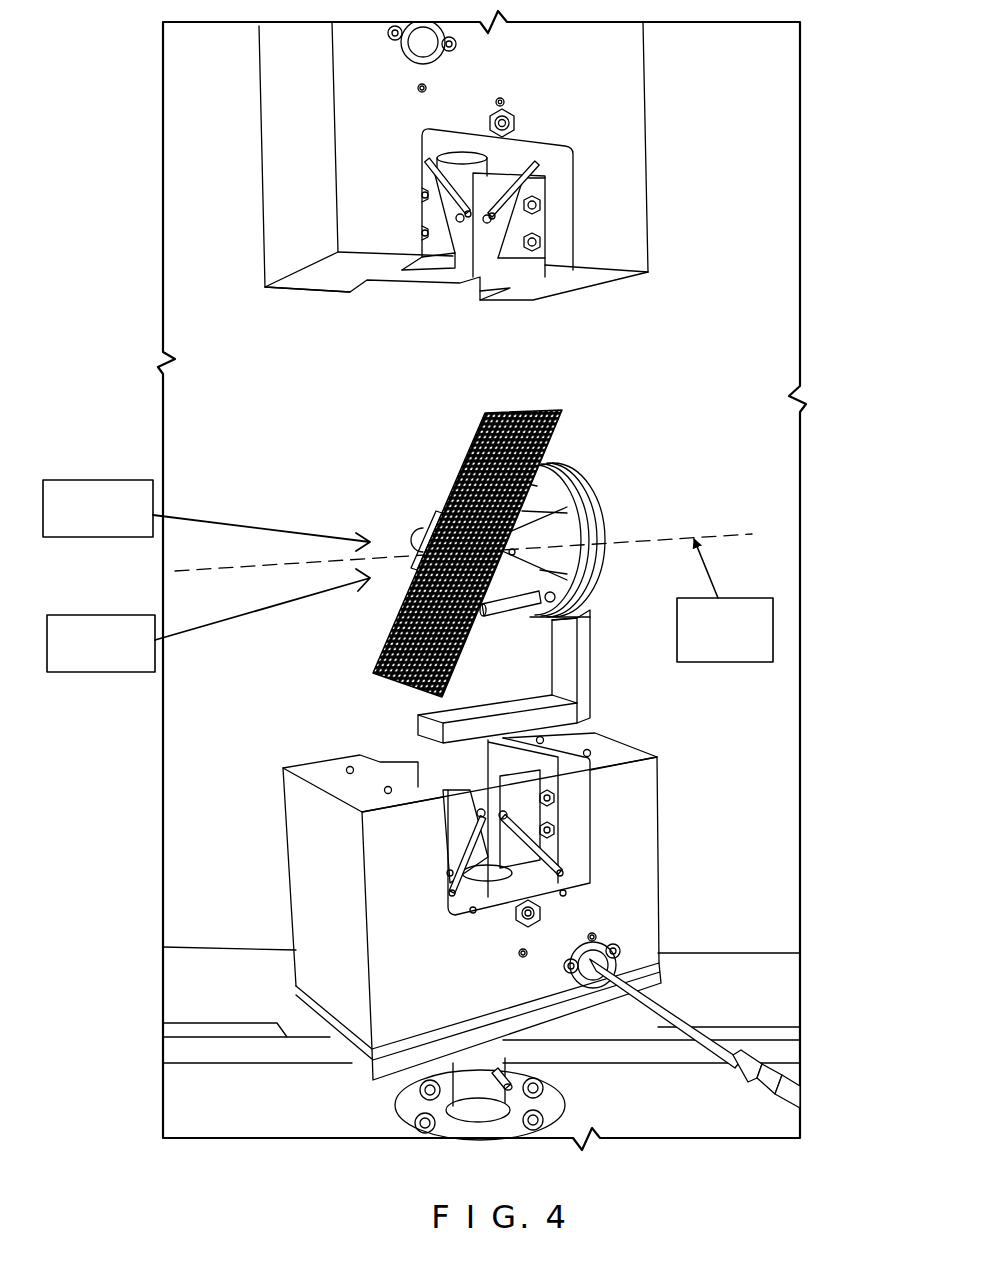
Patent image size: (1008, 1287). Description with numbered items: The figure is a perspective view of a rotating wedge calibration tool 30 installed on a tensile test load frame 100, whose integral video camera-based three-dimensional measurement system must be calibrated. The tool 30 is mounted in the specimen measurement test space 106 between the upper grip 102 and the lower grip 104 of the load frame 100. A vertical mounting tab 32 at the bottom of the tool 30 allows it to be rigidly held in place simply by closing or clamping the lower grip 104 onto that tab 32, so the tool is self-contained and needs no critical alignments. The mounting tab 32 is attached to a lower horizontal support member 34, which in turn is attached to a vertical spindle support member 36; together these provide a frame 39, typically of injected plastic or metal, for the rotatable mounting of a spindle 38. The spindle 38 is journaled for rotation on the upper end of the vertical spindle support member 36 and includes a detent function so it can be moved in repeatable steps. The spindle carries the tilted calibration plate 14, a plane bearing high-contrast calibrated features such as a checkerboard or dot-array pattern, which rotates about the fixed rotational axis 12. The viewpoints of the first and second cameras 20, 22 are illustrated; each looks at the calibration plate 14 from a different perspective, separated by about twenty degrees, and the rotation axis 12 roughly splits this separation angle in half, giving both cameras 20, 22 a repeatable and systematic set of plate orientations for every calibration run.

The tensile test load frame 100 is at (838, 298).
The upper grip 102 is at (630, 218).
The lower grip 104 is at (642, 792).
The test space 106 is at (367, 408).
The rotational axis 12 is at (667, 537).
The calibration plate 14 is at (527, 410).
The first camera 20 is at (75, 478).
The second camera 22 is at (115, 672).
The wedge calibration tool 30 is at (590, 690).
The vertical mounting tab 32 is at (455, 752).
The lower horizontal support member 34 is at (488, 708).
The vertical spindle support member 36 is at (583, 647).
The spindle 38 is at (582, 487).
The frame 39 is at (600, 617).